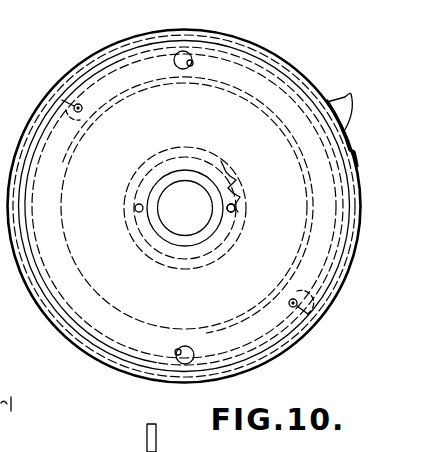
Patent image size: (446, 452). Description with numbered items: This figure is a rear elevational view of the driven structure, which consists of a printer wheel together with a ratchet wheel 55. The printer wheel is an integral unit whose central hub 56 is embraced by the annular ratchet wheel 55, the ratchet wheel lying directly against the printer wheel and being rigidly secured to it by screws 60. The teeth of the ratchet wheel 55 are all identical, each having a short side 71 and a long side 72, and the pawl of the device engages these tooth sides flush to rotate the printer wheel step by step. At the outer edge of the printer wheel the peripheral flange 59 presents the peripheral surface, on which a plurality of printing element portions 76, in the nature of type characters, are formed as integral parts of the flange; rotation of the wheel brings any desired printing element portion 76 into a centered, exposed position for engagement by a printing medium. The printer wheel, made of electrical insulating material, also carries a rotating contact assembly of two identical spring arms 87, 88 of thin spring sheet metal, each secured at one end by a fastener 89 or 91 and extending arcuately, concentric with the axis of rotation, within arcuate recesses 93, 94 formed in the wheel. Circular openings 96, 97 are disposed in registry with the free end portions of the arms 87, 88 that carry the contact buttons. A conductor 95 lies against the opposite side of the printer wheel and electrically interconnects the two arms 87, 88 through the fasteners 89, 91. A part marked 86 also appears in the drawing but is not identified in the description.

The ratchet wheel 55 is at (228, 174).
The hub 56 is at (159, 200).
The peripheral flange 59 is at (82, 72).
The screws 60 is at (135, 206).
The short side 71 is at (236, 207).
The long side 72 is at (236, 182).
The printing element portions 76 is at (342, 121).
The tab 86 is at (157, 436).
The spring arm 87 is at (128, 60).
The spring arm 88 is at (253, 365).
The fastener 89 is at (81, 111).
The fastener 91 is at (290, 301).
The arcuate recess 93 is at (158, 80).
The arcuate recess 94 is at (221, 332).
The conductor 95 is at (43, 278).
The circular opening 96 is at (193, 64).
The circular opening 97 is at (175, 352).